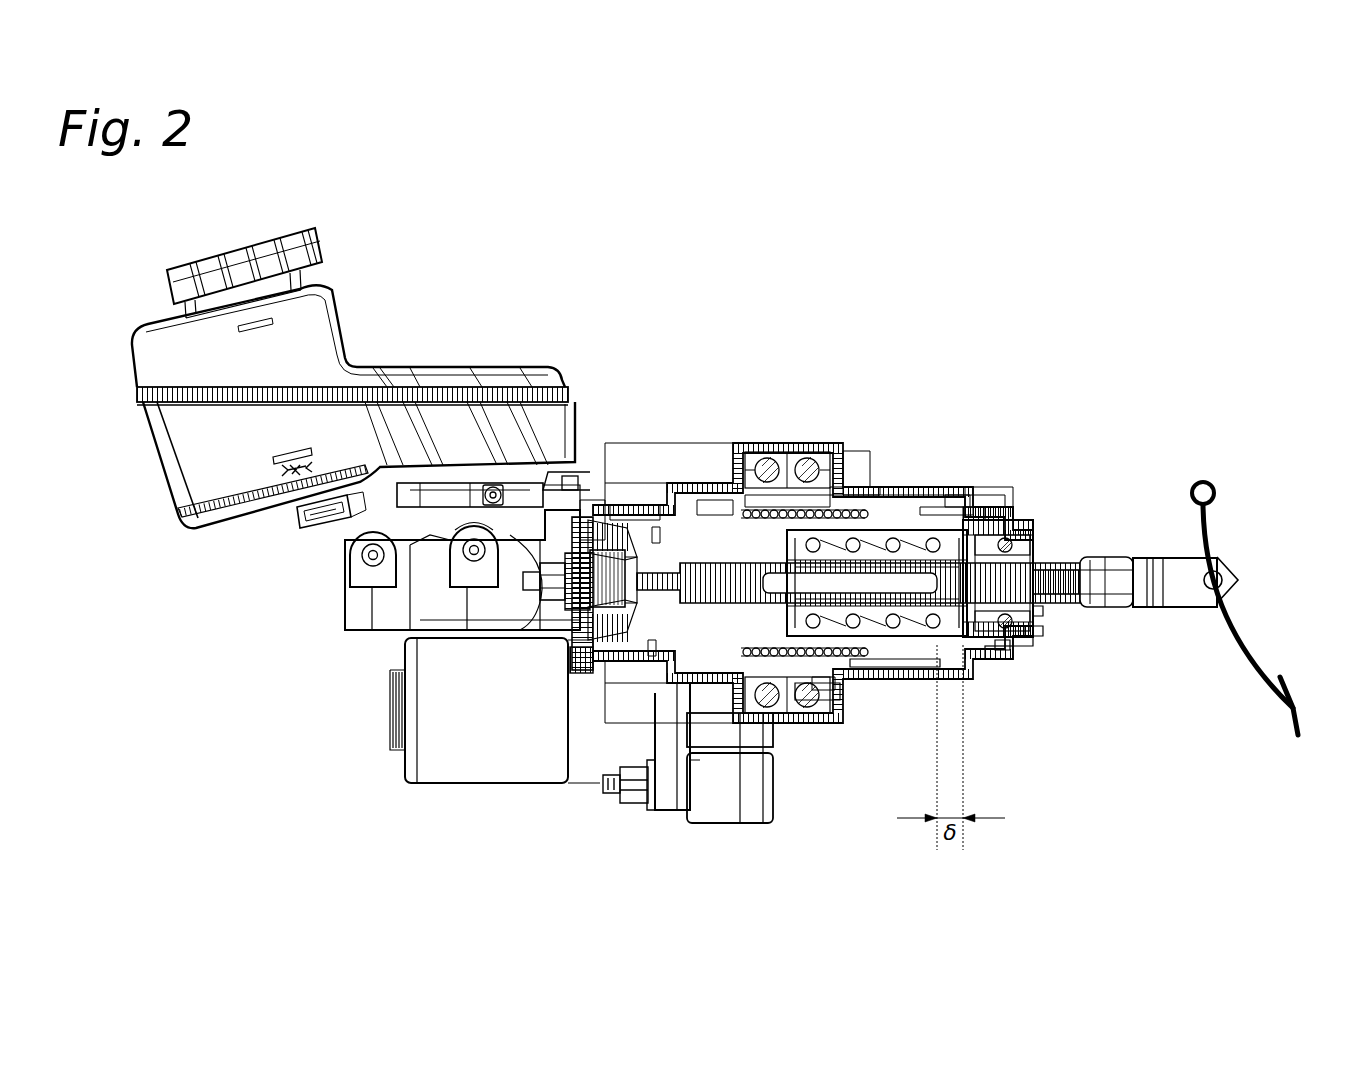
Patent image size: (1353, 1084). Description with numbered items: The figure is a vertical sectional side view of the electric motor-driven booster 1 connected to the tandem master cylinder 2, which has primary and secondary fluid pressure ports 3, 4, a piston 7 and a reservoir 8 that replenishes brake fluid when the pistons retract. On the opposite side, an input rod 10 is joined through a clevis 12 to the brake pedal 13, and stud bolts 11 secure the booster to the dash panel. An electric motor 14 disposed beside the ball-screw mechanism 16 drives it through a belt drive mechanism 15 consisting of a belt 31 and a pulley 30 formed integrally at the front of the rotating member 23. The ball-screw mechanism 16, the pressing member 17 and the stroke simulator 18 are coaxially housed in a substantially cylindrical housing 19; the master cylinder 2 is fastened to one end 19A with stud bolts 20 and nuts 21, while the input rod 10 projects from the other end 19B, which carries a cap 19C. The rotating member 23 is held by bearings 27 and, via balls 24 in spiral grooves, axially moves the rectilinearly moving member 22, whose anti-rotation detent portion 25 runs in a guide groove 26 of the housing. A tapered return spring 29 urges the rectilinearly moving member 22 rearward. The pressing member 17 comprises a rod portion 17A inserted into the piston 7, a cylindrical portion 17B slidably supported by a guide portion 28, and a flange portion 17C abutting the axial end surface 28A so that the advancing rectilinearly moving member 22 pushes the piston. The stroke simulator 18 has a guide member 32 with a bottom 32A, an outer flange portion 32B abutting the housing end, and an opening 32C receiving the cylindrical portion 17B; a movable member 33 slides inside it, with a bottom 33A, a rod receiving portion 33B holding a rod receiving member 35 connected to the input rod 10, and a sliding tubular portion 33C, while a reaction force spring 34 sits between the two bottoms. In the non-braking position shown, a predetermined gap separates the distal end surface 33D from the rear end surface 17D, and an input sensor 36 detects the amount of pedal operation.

The electric motor-driven booster 1 is at (1126, 340).
The master cylinder 2 is at (347, 600).
The fluid pressure port 3 is at (366, 540).
The fluid pressure port 4 is at (493, 485).
The piston 7 is at (600, 556).
The reservoir 8 is at (318, 318).
The input rod 10 is at (1082, 560).
The stud bolt 11 is at (882, 666).
The clevis 12 is at (1182, 592).
The brake pedal 13 is at (1243, 646).
The electric motor 14 is at (468, 772).
The belt drive mechanism 15 is at (728, 500).
The ball-screw mechanism 16 is at (880, 492).
The pressing member 17 is at (672, 506).
The rod portion 17A is at (628, 500).
The cylindrical portion 17B is at (920, 664).
The flange portion 17C is at (772, 505).
The rear end surface 17D is at (957, 497).
The stroke simulator 18 is at (1015, 525).
The housing 19 is at (832, 494).
The one end of housing 19A is at (600, 676).
The other end of housing 19B is at (996, 500).
The cap 19C is at (1040, 630).
The stud bolt 20 is at (527, 598).
The nut 21 is at (538, 600).
The rectilinearly moving member 22 is at (862, 656).
The rotating member 23 is at (815, 530).
The ball 24 is at (852, 468).
The anti-rotation detent portion 25 is at (977, 497).
The guide groove 26 is at (932, 495).
The bearing 27 is at (752, 527).
The guide portion 28 is at (871, 475).
The axial end surface 28A is at (748, 828).
The return spring 29 is at (592, 532).
The pulley 30 is at (707, 508).
The belt 31 is at (744, 497).
The guide member 32 is at (905, 530).
The bottom 32A is at (800, 706).
The outer flange portion 32B is at (1018, 642).
The opening 32C is at (822, 682).
The movable member 33 is at (1022, 526).
The bottom 33A is at (1040, 537).
The rod receiving portion 33B is at (1006, 514).
The sliding tubular portion 33C is at (986, 652).
The distal end surface 33D is at (1012, 652).
The reaction force spring 34 is at (1040, 615).
The rod receiving member 35 is at (1004, 652).
The input sensor 36 is at (1206, 480).